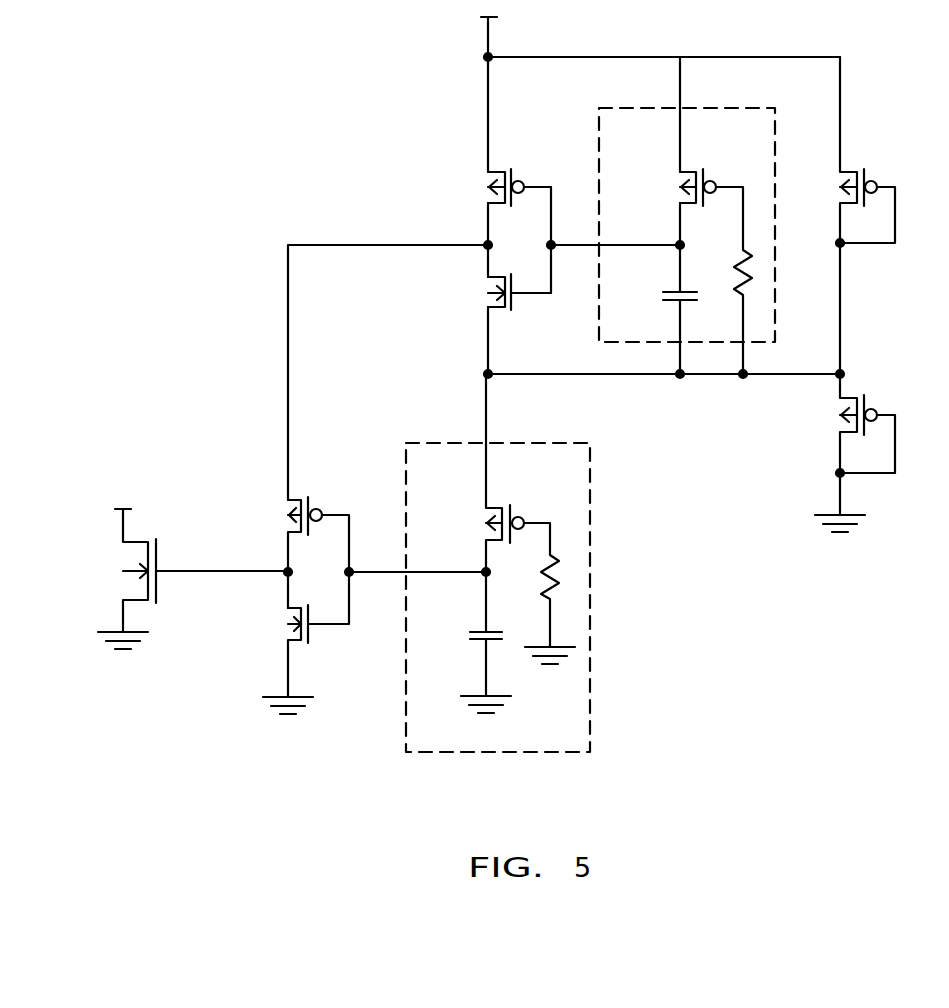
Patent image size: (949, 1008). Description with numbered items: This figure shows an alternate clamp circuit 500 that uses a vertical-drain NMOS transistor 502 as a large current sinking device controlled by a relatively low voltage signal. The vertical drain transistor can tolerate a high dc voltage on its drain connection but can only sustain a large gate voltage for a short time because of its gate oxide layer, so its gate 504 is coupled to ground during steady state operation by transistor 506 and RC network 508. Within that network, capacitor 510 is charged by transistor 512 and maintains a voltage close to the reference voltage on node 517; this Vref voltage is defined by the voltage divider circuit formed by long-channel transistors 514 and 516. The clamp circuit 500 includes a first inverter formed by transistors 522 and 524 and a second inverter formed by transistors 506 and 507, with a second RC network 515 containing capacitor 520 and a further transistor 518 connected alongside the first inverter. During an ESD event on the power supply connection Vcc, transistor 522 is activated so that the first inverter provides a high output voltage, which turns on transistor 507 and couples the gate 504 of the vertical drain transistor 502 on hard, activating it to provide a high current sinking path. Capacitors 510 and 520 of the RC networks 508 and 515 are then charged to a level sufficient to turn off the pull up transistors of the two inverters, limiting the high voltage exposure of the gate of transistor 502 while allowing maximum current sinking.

The clamp circuit 500 is at (315, 148).
The vertical-drain NMOS transistor 502 is at (122, 565).
The gate 504 is at (212, 570).
The transistor 506 is at (296, 641).
The transistor 507 is at (290, 500).
The RC network 508 is at (528, 443).
The capacitor 510 is at (472, 630).
The transistor 512 is at (496, 508).
The long-channel transistor 514 is at (848, 172).
The RC network 515 is at (723, 108).
The long-channel transistor 516 is at (860, 398).
The node 517 is at (845, 370).
The PMOS transistor 518 is at (688, 172).
The capacitor 520 is at (668, 290).
The transistor 522 is at (495, 172).
The transistor 524 is at (497, 309).